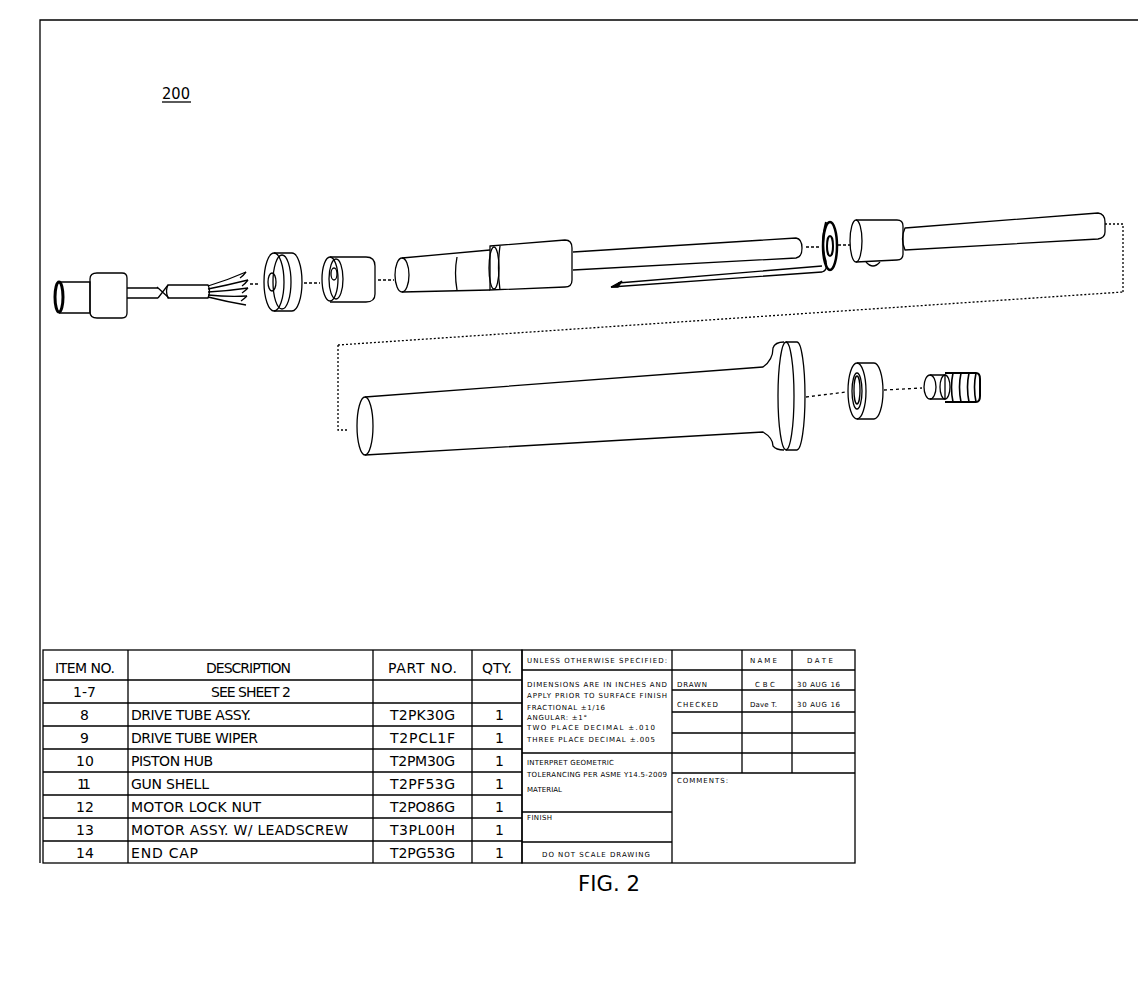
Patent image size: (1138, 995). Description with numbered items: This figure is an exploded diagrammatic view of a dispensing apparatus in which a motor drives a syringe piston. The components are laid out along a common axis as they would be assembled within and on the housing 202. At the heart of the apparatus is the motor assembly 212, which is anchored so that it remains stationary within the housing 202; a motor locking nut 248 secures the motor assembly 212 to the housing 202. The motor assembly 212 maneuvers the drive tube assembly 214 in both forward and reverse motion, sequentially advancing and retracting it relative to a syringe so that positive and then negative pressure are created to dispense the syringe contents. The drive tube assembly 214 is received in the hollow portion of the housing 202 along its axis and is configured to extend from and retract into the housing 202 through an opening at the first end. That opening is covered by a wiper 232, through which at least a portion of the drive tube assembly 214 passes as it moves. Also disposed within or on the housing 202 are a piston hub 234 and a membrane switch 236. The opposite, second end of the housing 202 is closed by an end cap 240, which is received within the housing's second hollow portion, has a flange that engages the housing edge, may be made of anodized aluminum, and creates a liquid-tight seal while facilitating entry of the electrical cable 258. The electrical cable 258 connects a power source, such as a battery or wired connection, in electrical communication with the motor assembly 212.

The housing 202 is at (598, 444).
The motor assembly 212 is at (557, 236).
The drive tube assembly 214 is at (986, 216).
The wiper 232 is at (872, 420).
The piston hub 234 is at (956, 406).
The membrane switch 236 is at (829, 220).
The end cap 240 is at (275, 247).
The motor locking nut 248 is at (364, 250).
The electrical cable 258 is at (263, 189).